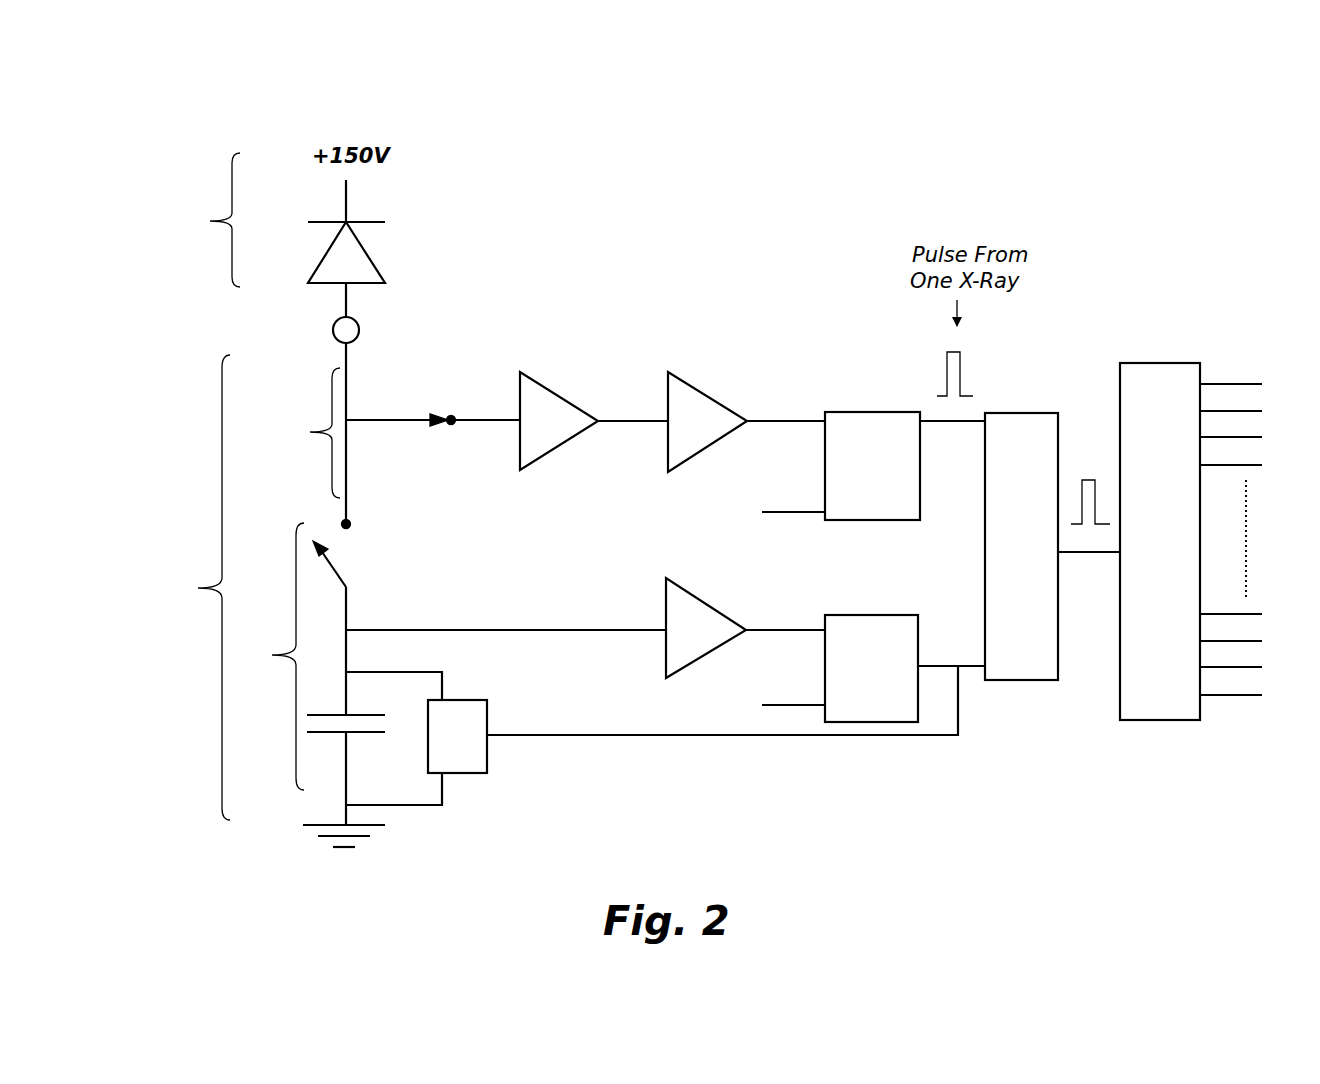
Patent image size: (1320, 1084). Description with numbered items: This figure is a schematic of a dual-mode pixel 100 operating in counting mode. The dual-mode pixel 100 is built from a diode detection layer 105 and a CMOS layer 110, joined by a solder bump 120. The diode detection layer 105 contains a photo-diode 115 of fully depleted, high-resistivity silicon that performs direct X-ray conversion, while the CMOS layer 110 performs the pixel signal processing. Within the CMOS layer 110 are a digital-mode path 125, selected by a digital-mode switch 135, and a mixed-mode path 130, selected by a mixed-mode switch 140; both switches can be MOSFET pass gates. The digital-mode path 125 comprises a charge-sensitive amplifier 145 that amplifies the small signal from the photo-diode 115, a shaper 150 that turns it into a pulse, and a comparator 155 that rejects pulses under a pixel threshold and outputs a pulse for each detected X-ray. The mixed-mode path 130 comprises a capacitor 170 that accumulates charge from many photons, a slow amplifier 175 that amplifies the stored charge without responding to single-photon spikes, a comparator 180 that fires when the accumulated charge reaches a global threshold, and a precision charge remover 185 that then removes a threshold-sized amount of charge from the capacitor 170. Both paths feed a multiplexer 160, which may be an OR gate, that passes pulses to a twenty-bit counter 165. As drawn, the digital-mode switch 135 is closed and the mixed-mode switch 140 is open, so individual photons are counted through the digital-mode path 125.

The dual-mode pixel 100 is at (176, 110).
The diode detection layer 105 is at (185, 220).
The CMOS layer 110 is at (179, 587).
The photo-diode 115 is at (366, 248).
The solder bump 120 is at (337, 321).
The digital-mode path 125 is at (395, 433).
The mixed-mode path 130 is at (264, 656).
The digital-mode switch 135 is at (408, 418).
The mixed-mode switch 140 is at (335, 562).
The charge-sensitive amplifier 145 is at (518, 444).
The shaper 150 is at (667, 452).
The comparator 155 is at (875, 521).
The multiplexer 160 is at (985, 545).
The counter 165 is at (1177, 722).
The capacitor 170 is at (357, 733).
The slow amplifier 175 is at (664, 645).
The comparator 180 is at (823, 660).
The precision charge remover 185 is at (468, 699).